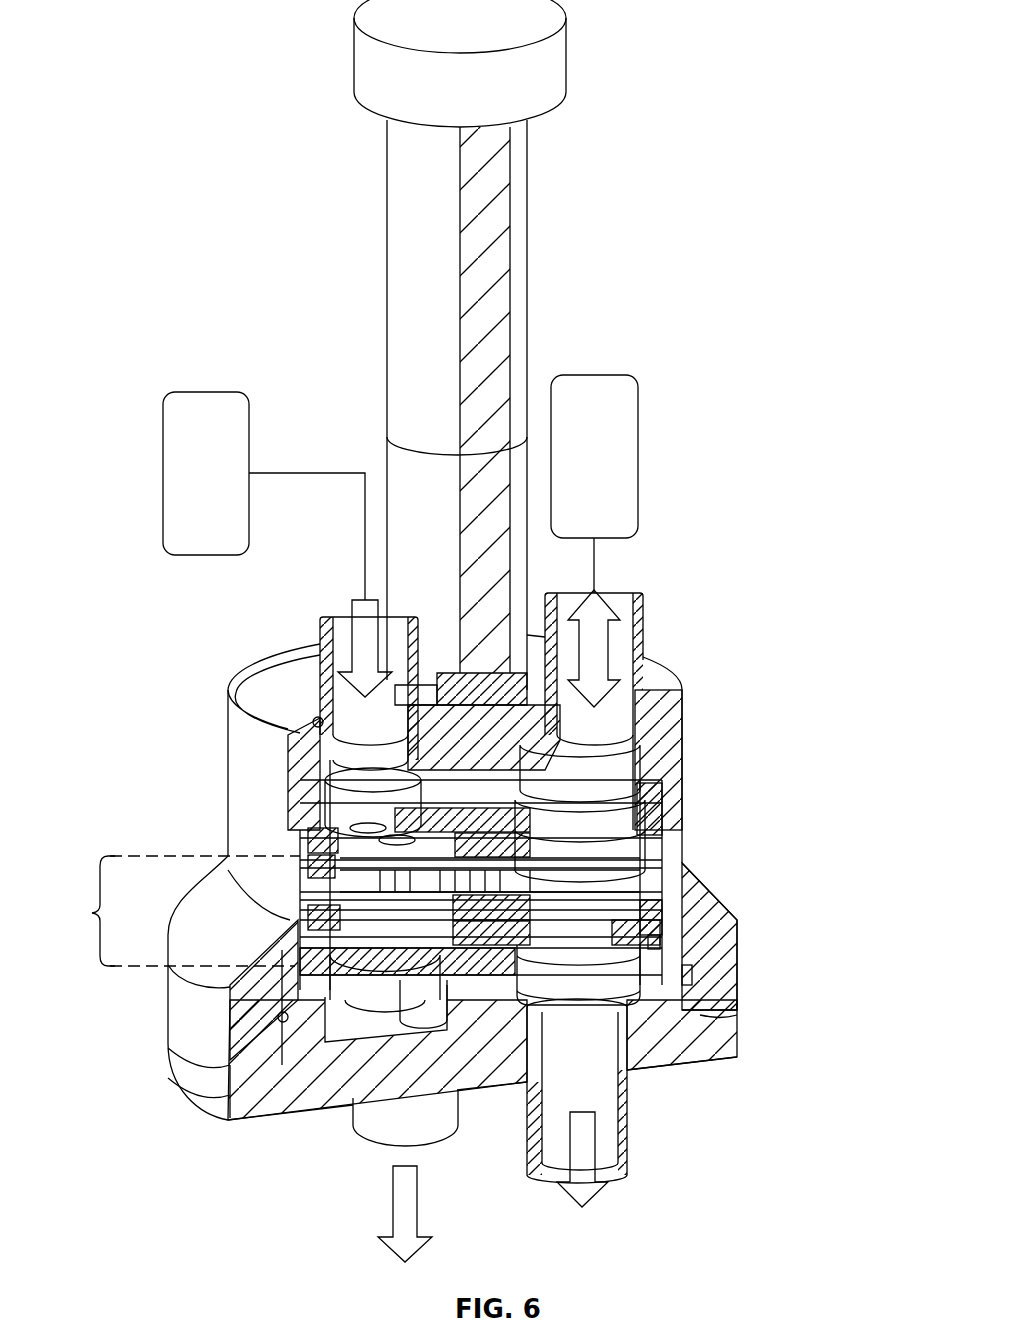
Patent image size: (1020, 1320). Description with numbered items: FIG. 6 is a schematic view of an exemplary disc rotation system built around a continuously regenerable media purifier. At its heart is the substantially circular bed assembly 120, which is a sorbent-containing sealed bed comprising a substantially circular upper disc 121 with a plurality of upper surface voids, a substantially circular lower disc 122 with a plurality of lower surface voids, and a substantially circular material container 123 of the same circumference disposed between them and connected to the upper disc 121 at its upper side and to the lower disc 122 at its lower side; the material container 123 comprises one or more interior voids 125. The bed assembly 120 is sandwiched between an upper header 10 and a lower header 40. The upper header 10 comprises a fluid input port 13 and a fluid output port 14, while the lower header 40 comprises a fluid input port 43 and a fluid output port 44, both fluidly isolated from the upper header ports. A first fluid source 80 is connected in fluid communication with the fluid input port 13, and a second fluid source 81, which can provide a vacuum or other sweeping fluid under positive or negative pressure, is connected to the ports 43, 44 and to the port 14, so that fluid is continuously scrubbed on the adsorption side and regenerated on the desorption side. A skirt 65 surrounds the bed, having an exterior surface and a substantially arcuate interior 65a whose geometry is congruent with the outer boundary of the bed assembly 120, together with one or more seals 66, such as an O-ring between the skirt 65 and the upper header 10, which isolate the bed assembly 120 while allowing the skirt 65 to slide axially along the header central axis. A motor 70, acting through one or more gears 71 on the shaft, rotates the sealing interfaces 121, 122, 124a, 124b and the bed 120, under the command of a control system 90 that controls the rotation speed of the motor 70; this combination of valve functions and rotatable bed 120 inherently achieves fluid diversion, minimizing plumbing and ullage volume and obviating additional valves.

The control system 90 is at (372, 66).
The motor 70 is at (400, 262).
The gear 71 is at (392, 463).
The first fluid source 80 is at (163, 473).
The second fluid source 81 is at (640, 457).
The fluid input port 13 is at (355, 722).
The fluid input port 43 is at (632, 600).
The upper header 10 is at (688, 715).
The substantially circular bed assembly 120 is at (356, 875).
The sealing interface 124a is at (680, 792).
The substantially circular upper disc 121 is at (672, 822).
The interior void 125 is at (610, 868).
The substantially circular material container 123 is at (654, 870).
The substantially circular lower disc 122 is at (680, 905).
The sealing interface 124b is at (660, 935).
The substantially arcuate interior 65a is at (656, 942).
The seal 66 is at (685, 972).
The lower header 40 is at (700, 1025).
The fluid output port 44 is at (595, 1093).
The fluid output port 14 is at (370, 1137).
The skirt 65 is at (228, 1115).